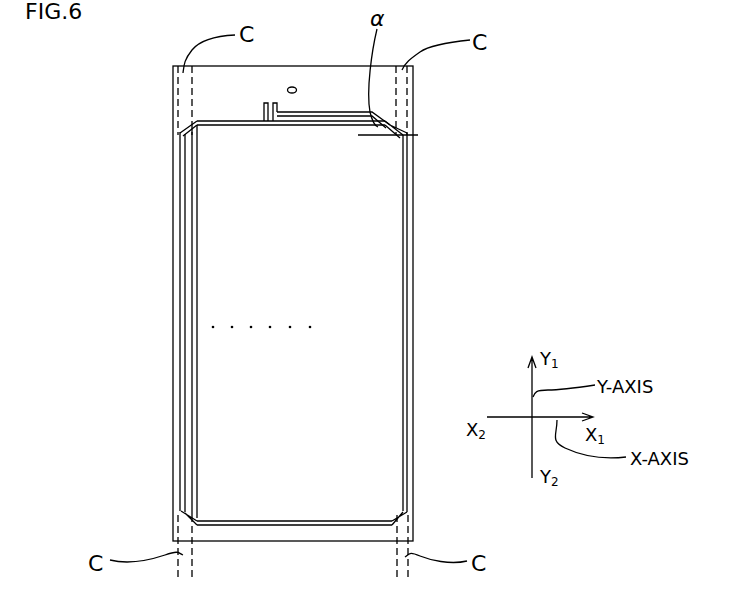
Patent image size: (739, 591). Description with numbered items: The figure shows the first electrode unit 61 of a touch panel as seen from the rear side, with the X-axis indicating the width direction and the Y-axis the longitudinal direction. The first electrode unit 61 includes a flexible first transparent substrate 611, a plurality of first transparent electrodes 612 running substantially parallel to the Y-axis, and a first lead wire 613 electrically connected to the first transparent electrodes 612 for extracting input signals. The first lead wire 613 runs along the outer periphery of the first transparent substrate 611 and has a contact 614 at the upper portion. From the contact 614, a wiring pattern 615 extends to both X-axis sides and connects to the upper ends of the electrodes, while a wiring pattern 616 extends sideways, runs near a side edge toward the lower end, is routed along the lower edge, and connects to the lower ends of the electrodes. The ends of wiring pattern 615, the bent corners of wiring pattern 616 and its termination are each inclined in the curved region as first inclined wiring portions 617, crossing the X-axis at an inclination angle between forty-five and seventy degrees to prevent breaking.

The first electrode unit 61 is at (557, 48).
The first transparent substrate 611 is at (247, 407).
The first transparent electrode 612 is at (186, 285).
The first lead wire 613 is at (413, 318).
The contact 614 is at (263, 100).
The wiring pattern 615 is at (322, 122).
The wiring pattern 616 is at (404, 207).
The first inclined wiring portion 617 is at (182, 130).